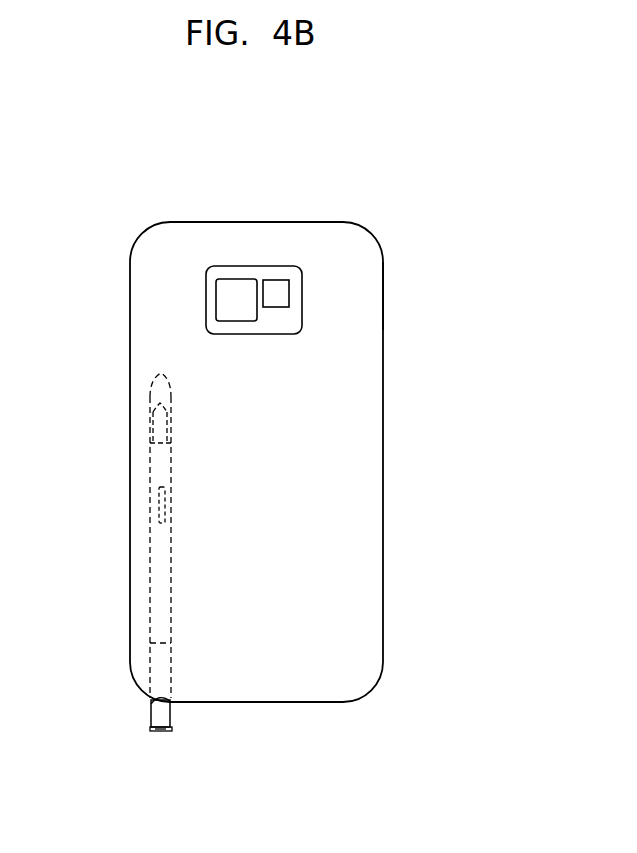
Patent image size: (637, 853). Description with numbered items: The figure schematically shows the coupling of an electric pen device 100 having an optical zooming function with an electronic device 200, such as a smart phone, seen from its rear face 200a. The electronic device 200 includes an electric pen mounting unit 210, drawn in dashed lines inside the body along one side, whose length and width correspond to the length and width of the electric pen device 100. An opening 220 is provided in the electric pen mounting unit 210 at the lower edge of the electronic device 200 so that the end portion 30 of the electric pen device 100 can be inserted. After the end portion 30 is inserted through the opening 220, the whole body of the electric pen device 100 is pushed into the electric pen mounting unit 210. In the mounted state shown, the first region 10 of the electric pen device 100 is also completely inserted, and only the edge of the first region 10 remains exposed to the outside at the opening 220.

The electronic device 200 is at (257, 221).
The rear surface of electronic device 200a is at (353, 291).
The first region 10 is at (163, 718).
The electric pen mounting unit 210 is at (156, 388).
The end portion 30 is at (157, 414).
The opening 220 is at (151, 701).
The electric pen device 100 is at (158, 731).